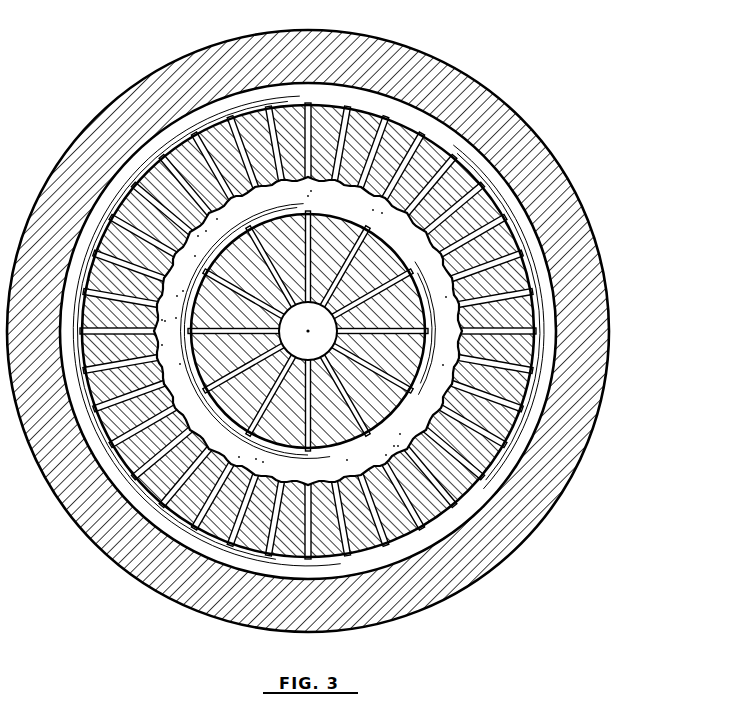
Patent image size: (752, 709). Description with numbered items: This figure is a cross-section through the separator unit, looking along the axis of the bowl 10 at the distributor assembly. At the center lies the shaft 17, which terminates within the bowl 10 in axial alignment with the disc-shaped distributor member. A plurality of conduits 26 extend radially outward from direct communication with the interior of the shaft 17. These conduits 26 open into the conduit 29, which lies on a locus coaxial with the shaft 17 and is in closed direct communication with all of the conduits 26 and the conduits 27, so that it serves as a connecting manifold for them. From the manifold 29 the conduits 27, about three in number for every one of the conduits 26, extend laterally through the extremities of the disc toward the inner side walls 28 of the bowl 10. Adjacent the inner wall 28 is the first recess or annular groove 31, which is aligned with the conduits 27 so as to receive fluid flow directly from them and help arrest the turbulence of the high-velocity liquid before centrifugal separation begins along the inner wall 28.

The bowl 10 is at (308, 331).
The shaft 17 is at (361, 354).
The conduits 26 is at (308, 331).
The conduits 27 is at (344, 331).
The inner side walls 28 is at (360, 331).
The conduit 29 is at (383, 331).
The annular groove 31 is at (357, 331).